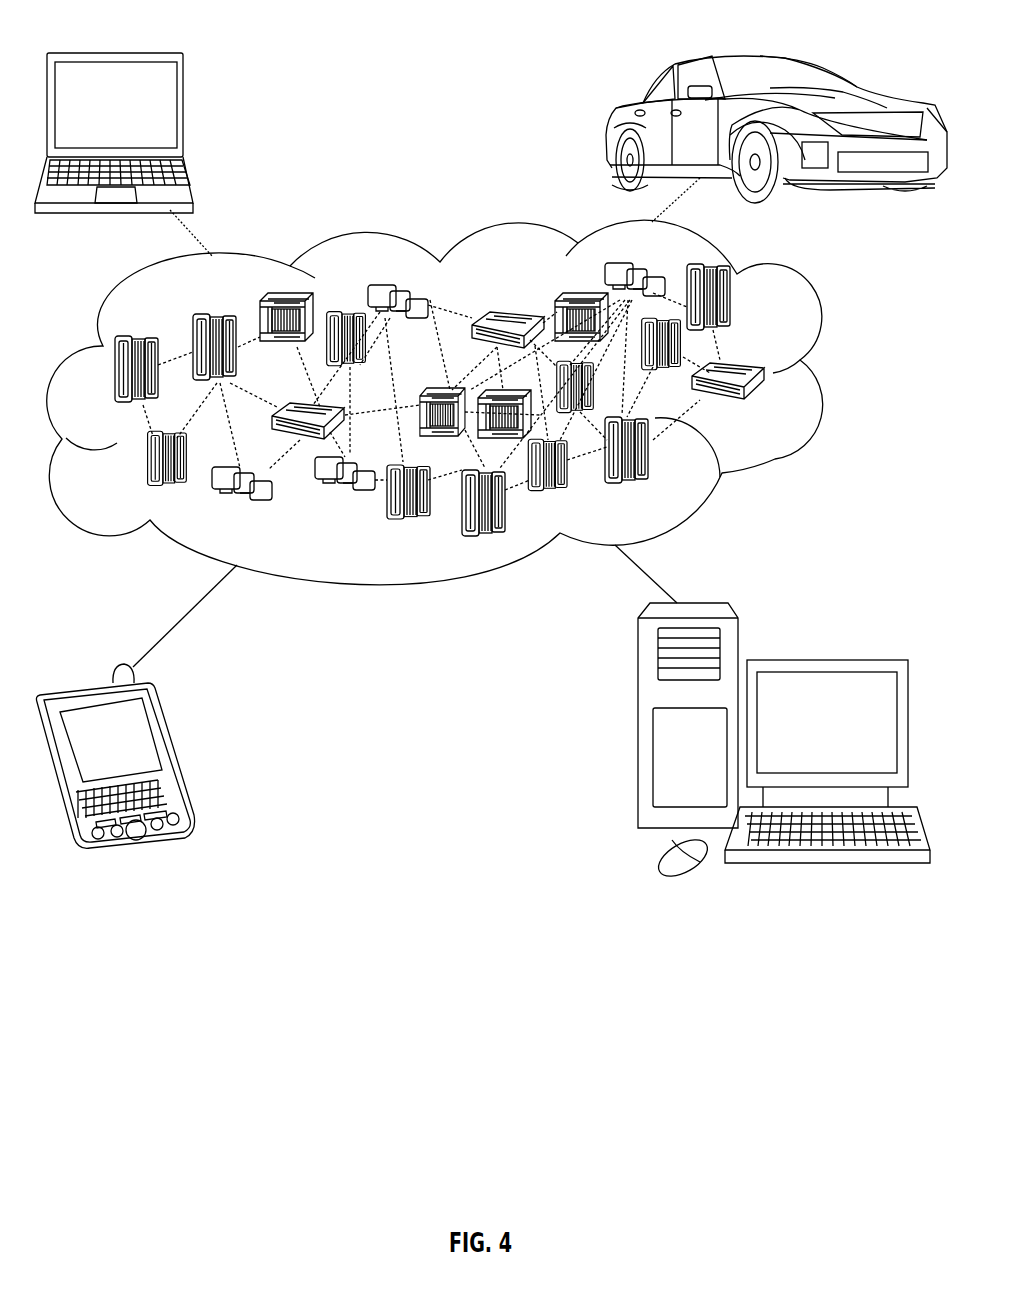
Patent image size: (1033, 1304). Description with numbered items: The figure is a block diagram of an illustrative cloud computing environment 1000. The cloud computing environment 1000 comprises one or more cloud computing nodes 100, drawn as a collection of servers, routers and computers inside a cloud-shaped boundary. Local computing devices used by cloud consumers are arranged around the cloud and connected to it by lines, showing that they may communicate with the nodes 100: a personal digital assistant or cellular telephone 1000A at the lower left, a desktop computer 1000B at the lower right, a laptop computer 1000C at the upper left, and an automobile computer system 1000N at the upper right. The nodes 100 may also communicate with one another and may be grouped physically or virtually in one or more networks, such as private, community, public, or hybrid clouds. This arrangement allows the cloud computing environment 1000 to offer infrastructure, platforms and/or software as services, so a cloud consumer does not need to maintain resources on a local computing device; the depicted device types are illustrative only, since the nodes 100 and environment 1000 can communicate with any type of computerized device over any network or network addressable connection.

The cloud computing environment 1000 is at (825, 378).
The cloud computing nodes 100 is at (768, 407).
The personal digital assistant (PDA) or cellular telephone 1000A is at (175, 752).
The desktop computer 1000B is at (835, 637).
The laptop computer 1000C is at (184, 113).
The automobile computer system 1000N is at (612, 128).